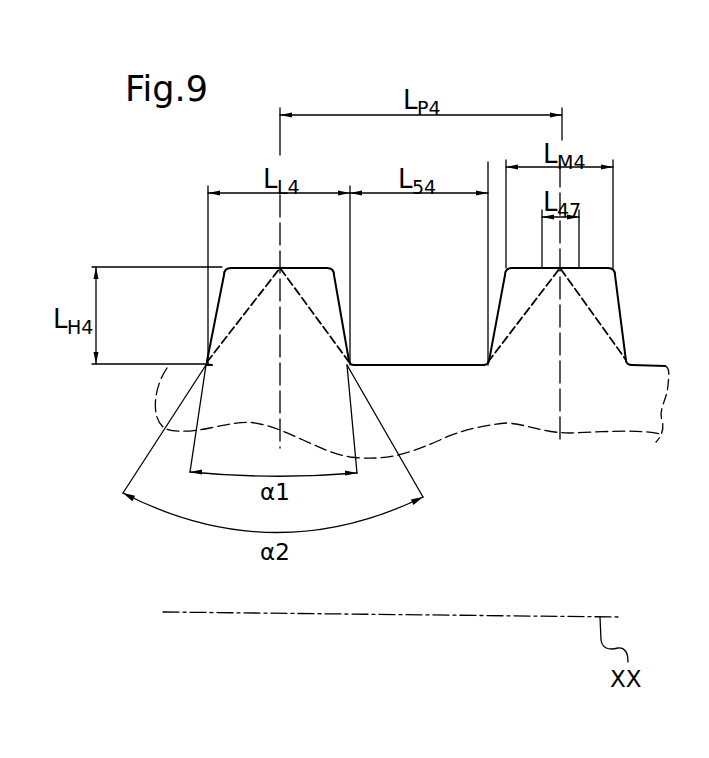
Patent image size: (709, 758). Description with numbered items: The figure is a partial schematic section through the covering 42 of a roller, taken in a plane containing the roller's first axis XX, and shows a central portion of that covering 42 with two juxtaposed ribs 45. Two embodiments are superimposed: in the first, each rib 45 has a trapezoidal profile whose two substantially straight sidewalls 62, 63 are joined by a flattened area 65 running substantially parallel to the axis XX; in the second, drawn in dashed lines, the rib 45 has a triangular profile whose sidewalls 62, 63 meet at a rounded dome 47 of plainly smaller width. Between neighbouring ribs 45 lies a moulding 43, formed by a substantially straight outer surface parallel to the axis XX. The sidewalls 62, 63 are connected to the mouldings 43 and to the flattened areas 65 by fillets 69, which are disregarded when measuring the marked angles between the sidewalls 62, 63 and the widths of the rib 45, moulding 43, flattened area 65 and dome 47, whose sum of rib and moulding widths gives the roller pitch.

The covering 42 is at (374, 100).
The moulding 43 is at (415, 365).
The rib 45 is at (290, 333).
The rounded dome 47 is at (280, 268).
The sidewall 62 is at (237, 310).
The sidewall 63 is at (320, 308).
The flattened area 65 is at (320, 268).
The fillet 69 is at (223, 265).